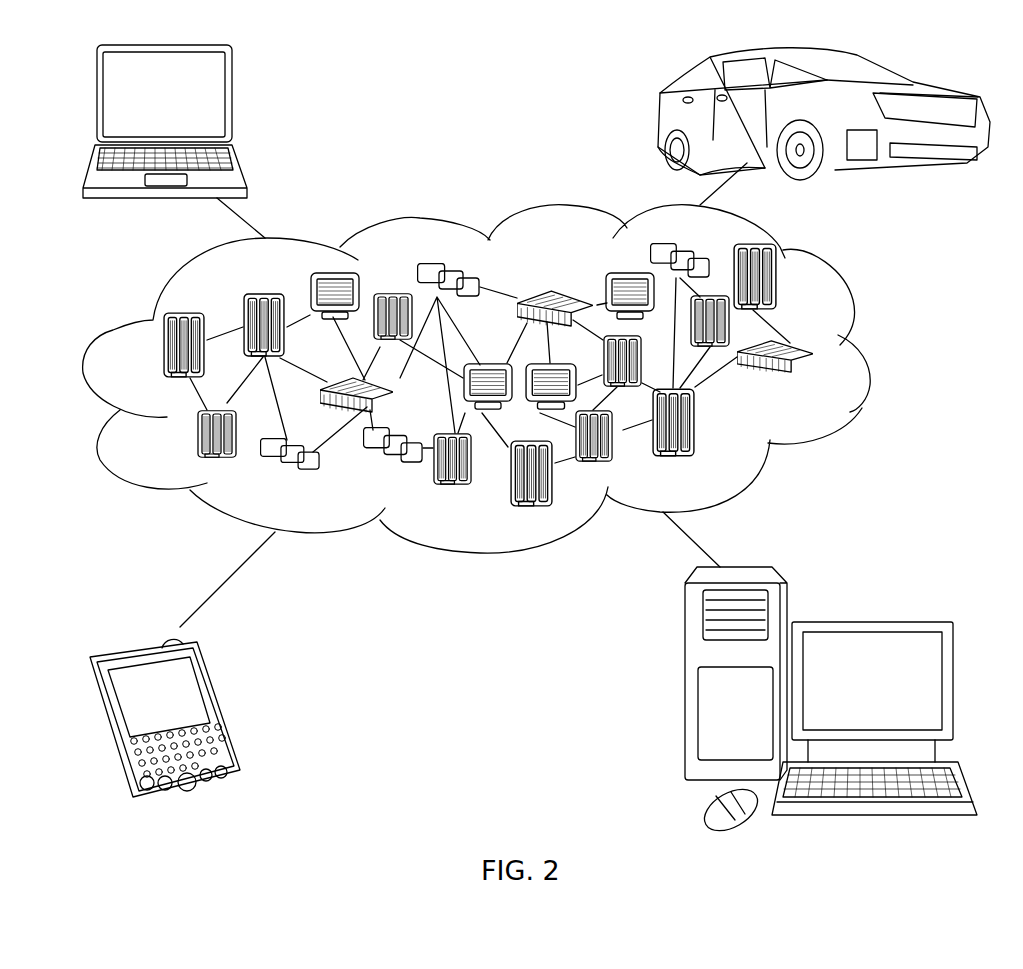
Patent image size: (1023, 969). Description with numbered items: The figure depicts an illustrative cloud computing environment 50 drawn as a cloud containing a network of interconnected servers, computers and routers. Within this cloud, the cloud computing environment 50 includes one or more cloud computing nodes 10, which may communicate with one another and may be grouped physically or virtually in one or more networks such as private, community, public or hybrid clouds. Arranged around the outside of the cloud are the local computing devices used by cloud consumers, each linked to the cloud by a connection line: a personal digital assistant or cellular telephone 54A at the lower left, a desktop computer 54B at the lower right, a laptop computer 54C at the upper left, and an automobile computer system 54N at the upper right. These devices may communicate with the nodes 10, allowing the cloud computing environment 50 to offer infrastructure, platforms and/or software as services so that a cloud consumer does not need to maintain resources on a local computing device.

The cloud computing node 10 is at (812, 381).
The cloud computing environment 50 is at (872, 353).
The personal digital assistant or cellular telephone 54A is at (222, 708).
The desktop computer 54B is at (868, 620).
The laptop computer 54C is at (232, 102).
The automobile computer system 54N is at (655, 120).